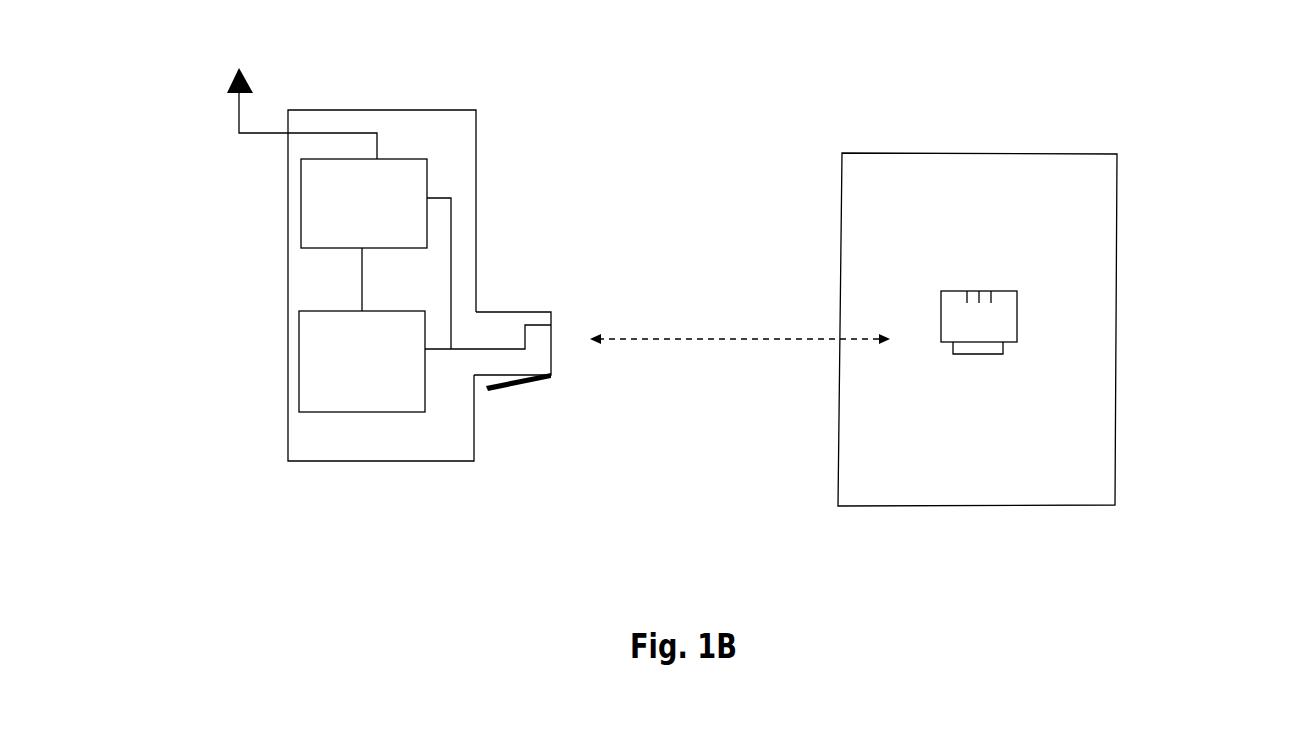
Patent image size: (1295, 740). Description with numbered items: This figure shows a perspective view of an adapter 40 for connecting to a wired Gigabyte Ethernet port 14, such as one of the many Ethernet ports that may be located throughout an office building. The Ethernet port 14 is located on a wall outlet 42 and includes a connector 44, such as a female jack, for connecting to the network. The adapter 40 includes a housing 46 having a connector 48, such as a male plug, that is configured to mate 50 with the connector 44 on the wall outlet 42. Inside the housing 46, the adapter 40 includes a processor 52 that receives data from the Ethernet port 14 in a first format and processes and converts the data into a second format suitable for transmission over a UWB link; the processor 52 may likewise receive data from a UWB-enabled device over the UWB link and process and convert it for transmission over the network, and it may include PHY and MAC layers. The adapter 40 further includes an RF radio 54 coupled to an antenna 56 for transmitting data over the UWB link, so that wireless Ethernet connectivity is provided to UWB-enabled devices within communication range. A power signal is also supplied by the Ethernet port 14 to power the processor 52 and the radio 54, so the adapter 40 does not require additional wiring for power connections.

The Ethernet port 14 is at (1183, 164).
The adapter 40 is at (156, 197).
The wall outlet 42 is at (842, 175).
The connector 44 is at (940, 313).
The housing 46 is at (478, 118).
The connector 48 is at (513, 312).
The mate 50 is at (739, 339).
The processor 52 is at (300, 347).
The RF radio 54 is at (302, 237).
The antenna 56 is at (228, 82).